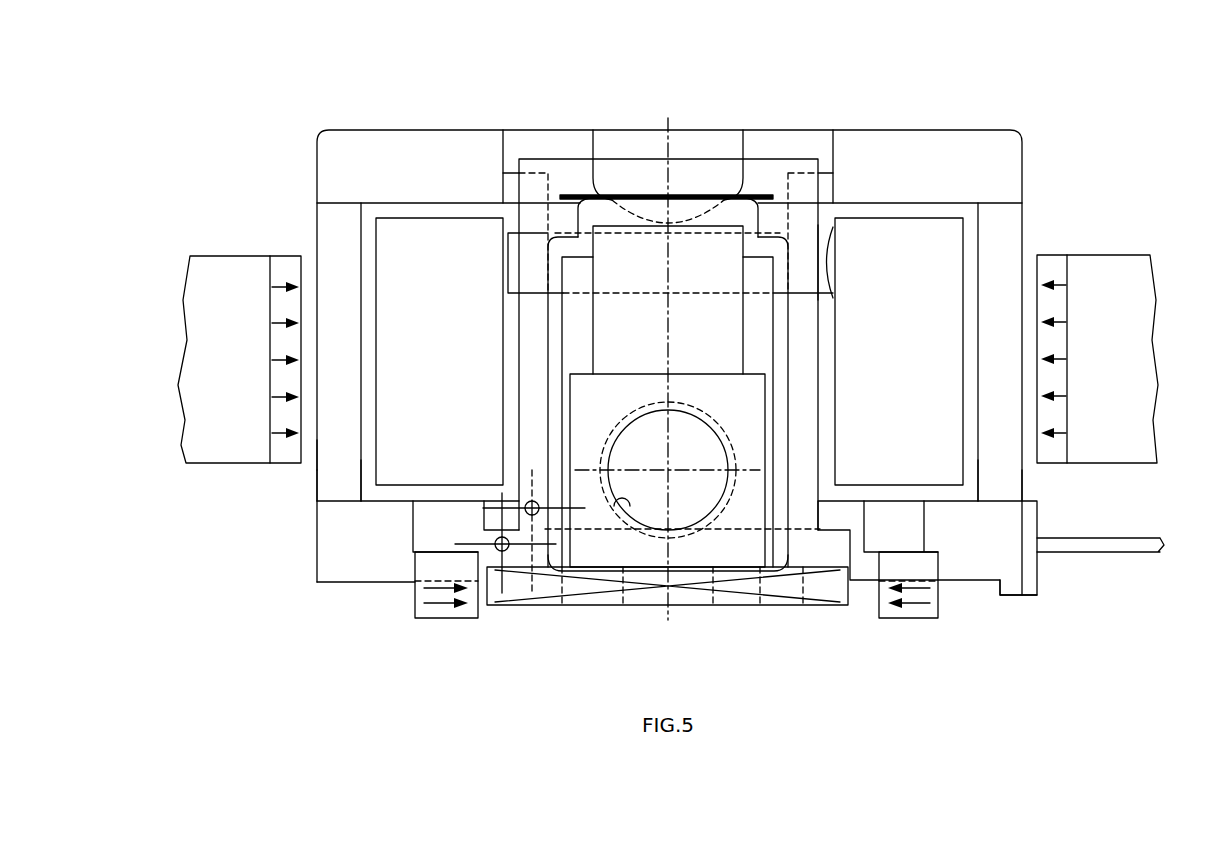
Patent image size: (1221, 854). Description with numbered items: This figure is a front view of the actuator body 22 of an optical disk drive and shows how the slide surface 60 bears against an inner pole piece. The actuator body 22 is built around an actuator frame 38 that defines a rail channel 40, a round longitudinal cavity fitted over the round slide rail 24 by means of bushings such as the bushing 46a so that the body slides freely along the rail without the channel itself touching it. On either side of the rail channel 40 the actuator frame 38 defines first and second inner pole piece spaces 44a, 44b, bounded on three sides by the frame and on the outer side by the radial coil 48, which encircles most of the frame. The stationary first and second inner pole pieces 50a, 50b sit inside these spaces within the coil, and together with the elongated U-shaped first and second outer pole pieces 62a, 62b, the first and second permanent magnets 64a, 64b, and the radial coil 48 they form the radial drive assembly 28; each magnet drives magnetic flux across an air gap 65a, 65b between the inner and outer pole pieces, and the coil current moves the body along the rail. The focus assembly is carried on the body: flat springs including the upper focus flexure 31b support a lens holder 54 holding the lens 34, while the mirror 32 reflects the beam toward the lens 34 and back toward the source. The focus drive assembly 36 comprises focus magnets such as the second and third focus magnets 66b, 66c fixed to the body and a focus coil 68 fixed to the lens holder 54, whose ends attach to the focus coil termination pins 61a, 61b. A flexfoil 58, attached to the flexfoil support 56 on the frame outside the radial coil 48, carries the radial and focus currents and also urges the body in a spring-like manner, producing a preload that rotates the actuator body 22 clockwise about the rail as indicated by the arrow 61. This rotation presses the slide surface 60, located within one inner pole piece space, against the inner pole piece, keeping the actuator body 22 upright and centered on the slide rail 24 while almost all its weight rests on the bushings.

The actuator body 22 is at (421, 145).
The slide rail 24 is at (655, 508).
The radial drive assembly 28 is at (252, 546).
The upper focus flexure 31b is at (725, 312).
The mirror 32 is at (727, 310).
The lens 34 is at (630, 175).
The focus drive assembly 36 is at (877, 668).
The actuator frame 38 is at (1009, 148).
The rail channel 40 is at (628, 520).
The first inner pole piece space 44a is at (972, 218).
The second inner pole piece space 44b is at (365, 222).
The bushing 46a is at (745, 508).
The radial coil 48 is at (330, 472).
The first inner pole piece 50a is at (915, 252).
The second inner pole piece 50b is at (415, 240).
The lens holder 54 is at (553, 273).
The flexfoil support 56 is at (1030, 587).
The flexfoil 58 is at (1112, 555).
The slide surface 60 is at (828, 250).
The arrow 61 is at (365, 17).
The focus coil termination pin 61a is at (456, 546).
The focus coil termination pin 61b is at (483, 508).
The first outer pole piece 62a is at (1133, 330).
The second outer pole piece 62b is at (230, 408).
The first permanent magnet 64a is at (445, 615).
The second permanent magnet 64b is at (337, 470).
The air gap 65a is at (970, 477).
The air gap 65b is at (370, 473).
The second focus magnet 66b is at (722, 595).
The third focus magnet 66c is at (912, 615).
The focus coil 68 is at (545, 600).